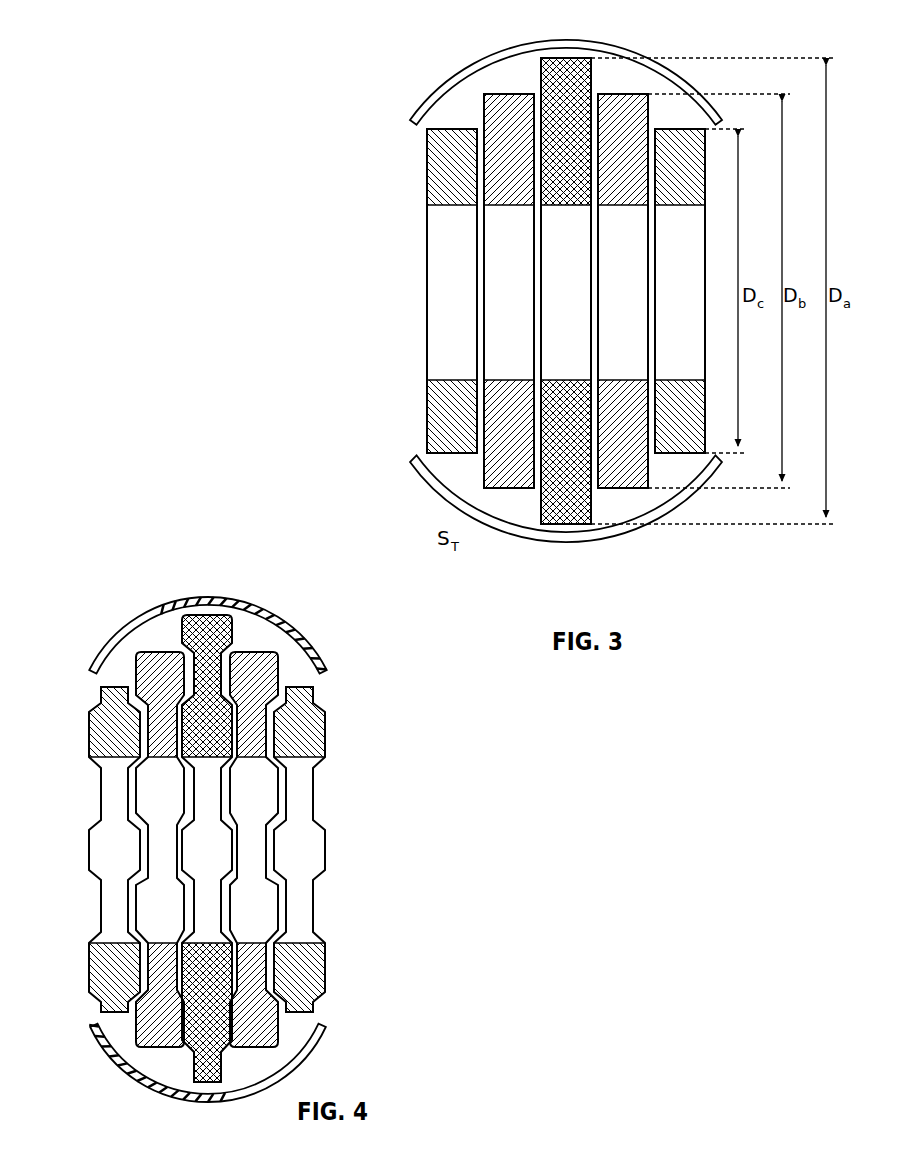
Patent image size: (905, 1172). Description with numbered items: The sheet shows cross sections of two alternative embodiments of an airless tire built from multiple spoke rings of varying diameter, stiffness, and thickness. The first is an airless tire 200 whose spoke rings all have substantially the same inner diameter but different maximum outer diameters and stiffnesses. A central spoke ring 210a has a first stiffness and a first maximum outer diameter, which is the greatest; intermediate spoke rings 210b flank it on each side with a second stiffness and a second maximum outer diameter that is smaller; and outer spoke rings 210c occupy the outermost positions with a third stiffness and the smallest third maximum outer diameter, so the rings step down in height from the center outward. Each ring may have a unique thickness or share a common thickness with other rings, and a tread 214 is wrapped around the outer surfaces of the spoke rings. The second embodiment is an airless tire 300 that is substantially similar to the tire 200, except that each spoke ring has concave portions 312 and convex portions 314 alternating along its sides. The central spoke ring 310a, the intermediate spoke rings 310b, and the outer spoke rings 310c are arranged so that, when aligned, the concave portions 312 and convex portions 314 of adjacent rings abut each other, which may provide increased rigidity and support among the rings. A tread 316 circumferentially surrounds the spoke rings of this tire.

In FIG. 3, the airless tire 200 is at (306, 60).
In FIG. 3, the tread 214 is at (567, 44).
In FIG. 3, the central spoke ring 210a is at (563, 526).
In FIG. 3, the intermediate spoke rings 210b is at (515, 476).
In FIG. 3, the outer spoke rings 210c is at (433, 424).
In FIG. 4, the airless tire 300 is at (117, 570).
In FIG. 4, the tread 316 is at (283, 619).
In FIG. 4, the central spoke ring 310a is at (224, 1092).
In FIG. 4, the intermediate spoke rings 310b is at (142, 1048).
In FIG. 4, the outer spoke rings 310c is at (113, 1013).
In FIG. 4, the concave portions 312 is at (112, 712).
In FIG. 4, the convex portions 314 is at (237, 727).